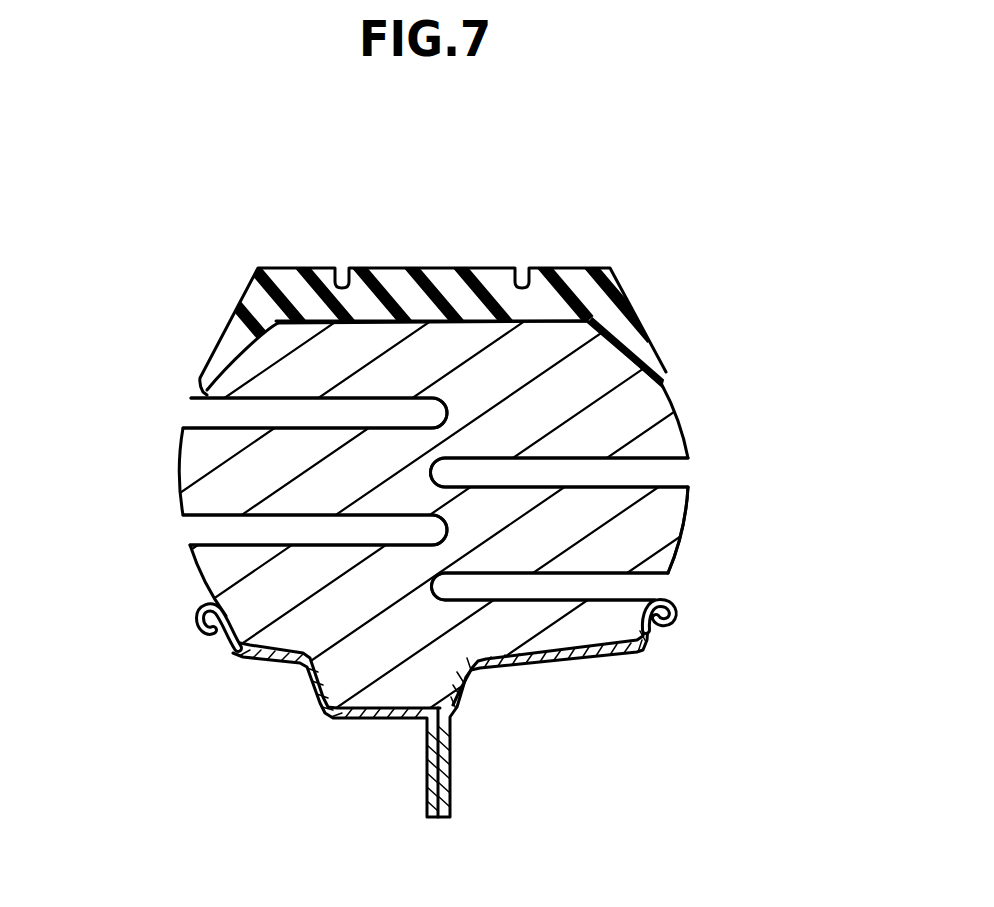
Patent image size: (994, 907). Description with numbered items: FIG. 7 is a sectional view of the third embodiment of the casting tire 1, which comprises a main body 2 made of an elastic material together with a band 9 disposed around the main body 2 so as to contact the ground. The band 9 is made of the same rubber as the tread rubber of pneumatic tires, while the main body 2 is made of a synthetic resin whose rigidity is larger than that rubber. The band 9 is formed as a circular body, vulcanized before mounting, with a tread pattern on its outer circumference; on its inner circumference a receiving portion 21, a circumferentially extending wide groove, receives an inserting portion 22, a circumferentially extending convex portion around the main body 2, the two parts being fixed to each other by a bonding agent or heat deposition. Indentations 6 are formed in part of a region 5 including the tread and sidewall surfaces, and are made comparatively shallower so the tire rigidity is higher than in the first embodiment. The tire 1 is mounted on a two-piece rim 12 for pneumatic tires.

The casting tire 1 is at (709, 207).
The main body 2 is at (660, 420).
The region 5 is at (692, 523).
The indentation 6 is at (215, 418).
The band 9 is at (559, 265).
The two-piece rim 12 is at (464, 753).
The receiving portion 21 is at (286, 328).
The inserting portion 22 is at (365, 345).